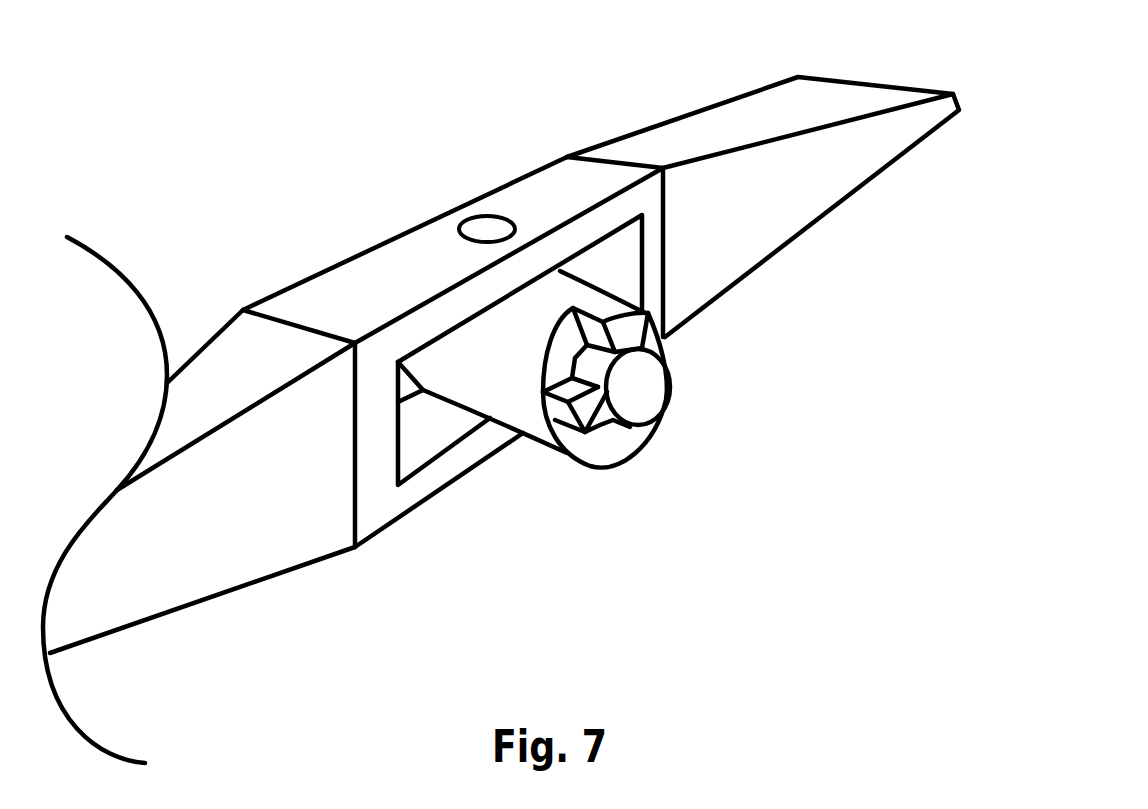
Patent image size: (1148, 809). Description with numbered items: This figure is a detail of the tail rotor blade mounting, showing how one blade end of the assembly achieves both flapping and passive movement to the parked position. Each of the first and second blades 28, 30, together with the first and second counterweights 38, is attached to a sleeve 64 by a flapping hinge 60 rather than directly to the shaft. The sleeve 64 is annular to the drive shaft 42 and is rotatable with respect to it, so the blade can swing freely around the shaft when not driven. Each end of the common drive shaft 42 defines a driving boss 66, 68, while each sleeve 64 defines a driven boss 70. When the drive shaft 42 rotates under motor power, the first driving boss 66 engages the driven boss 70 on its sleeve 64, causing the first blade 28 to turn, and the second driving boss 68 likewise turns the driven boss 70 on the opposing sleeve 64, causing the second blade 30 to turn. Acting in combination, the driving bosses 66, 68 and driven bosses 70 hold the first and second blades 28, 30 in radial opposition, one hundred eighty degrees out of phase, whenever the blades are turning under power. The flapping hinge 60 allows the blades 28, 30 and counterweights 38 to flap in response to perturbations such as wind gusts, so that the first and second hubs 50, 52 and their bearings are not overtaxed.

The first blade 28 is at (145, 480).
The second blade 30 is at (188, 407).
The counterweight 38 is at (702, 127).
The drive shaft 42 is at (640, 388).
The first hub 50 is at (427, 427).
The second hub 52 is at (675, 575).
The flapping hinge 60 is at (488, 228).
The sleeve 64 is at (495, 363).
The first driving boss 66 is at (591, 447).
The second driving boss 68 is at (593, 415).
The driven boss 70 is at (627, 328).